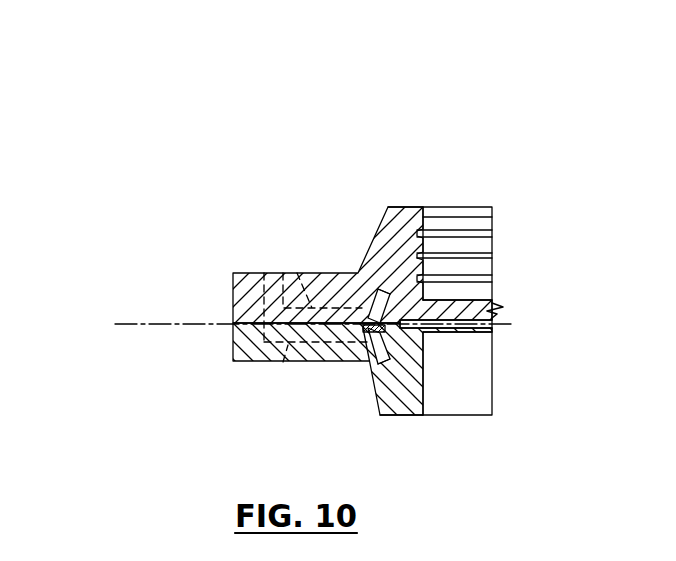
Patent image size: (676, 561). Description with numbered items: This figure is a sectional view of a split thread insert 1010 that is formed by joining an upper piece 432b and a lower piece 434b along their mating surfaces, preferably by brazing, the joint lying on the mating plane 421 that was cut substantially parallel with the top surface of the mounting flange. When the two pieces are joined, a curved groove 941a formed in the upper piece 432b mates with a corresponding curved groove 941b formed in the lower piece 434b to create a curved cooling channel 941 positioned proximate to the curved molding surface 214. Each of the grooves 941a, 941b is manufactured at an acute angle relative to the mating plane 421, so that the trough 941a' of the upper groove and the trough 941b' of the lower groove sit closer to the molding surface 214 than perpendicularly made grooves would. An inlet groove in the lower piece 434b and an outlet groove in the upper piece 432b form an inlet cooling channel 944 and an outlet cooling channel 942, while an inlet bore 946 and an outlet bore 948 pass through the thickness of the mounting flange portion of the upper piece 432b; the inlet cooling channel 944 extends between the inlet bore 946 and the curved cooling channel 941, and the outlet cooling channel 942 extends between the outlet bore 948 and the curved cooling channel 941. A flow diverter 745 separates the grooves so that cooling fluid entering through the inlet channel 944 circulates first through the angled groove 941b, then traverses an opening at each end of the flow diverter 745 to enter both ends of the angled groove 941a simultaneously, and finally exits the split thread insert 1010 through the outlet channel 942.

The split thread insert 1010 is at (140, 164).
The mating plane 421 is at (129, 324).
The upper piece 432b is at (233, 296).
The lower piece 434b is at (233, 333).
The curved cooling channel 941 is at (390, 272).
The curved groove 941a is at (331, 269).
The curved groove 941b is at (324, 372).
The trough 941a' is at (484, 251).
The trough 941b' is at (367, 411).
The outlet cooling channel 942 is at (297, 273).
The inlet cooling channel 944 is at (283, 362).
The inlet bore 946 is at (243, 273).
The outlet bore 948 is at (272, 303).
The flow diverter 745 is at (395, 338).
The curved molding surface 214 is at (472, 289).